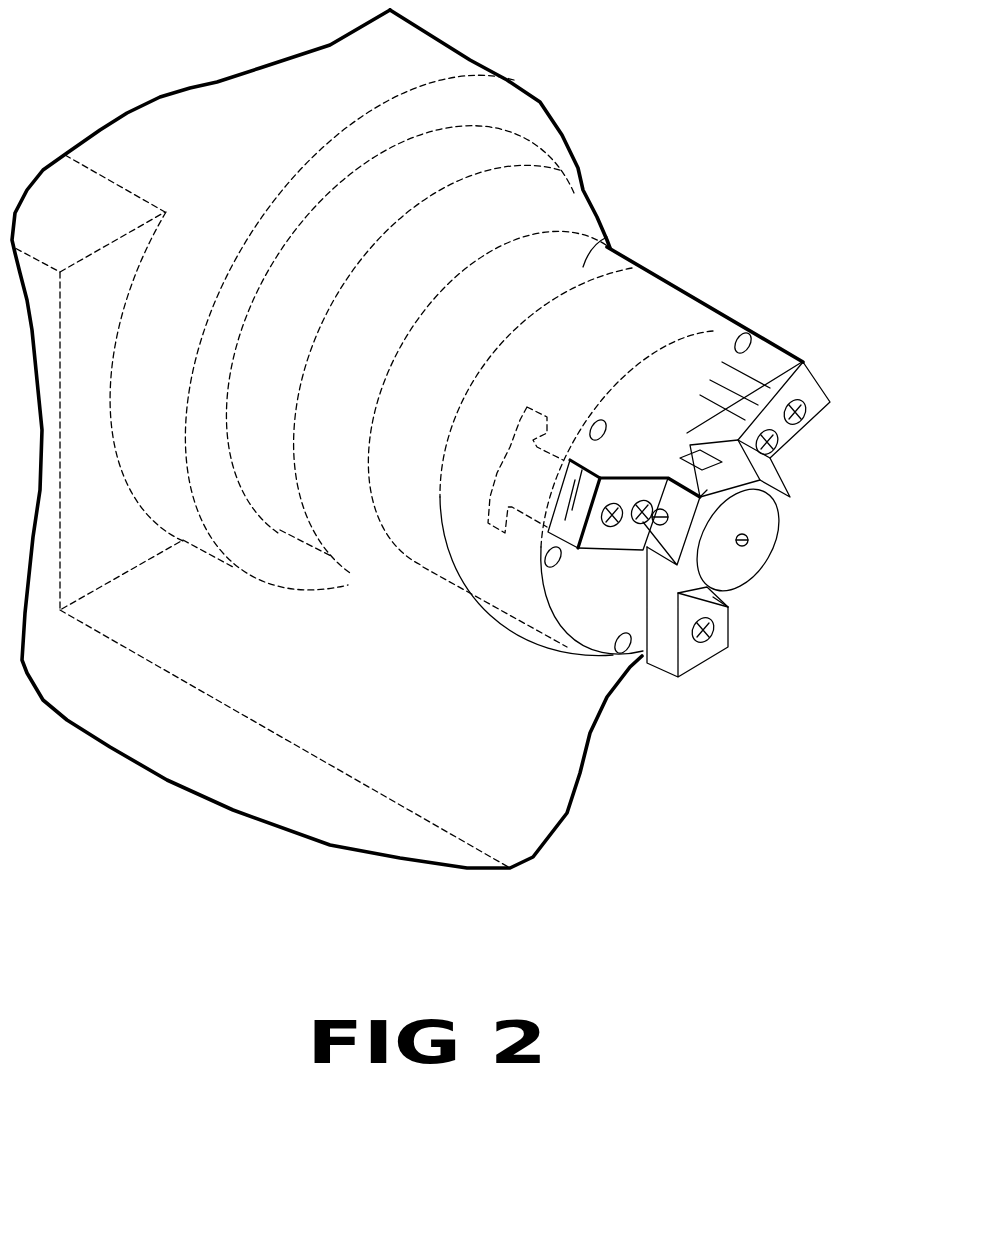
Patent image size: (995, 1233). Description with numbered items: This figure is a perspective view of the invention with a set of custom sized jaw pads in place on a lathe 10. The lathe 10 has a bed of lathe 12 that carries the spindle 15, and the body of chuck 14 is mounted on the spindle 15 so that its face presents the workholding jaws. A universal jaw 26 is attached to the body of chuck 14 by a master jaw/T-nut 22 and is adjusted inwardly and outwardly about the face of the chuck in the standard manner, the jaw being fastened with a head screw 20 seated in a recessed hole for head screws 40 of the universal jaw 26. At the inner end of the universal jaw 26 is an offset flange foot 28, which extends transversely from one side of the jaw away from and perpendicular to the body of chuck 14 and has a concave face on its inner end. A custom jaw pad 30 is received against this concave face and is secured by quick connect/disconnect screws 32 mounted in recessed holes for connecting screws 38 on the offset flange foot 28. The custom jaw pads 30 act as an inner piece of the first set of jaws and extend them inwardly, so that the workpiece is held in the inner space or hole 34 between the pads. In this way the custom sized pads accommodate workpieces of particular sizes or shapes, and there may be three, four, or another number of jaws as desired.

The lathe 10 is at (432, 54).
The bed of lathe 12 is at (153, 742).
The body of chuck 14 is at (647, 303).
The spindle 15 is at (607, 237).
The head screw 20 is at (797, 417).
The master jaw/T-nut 22 is at (510, 480).
The universal jaws 26 is at (770, 370).
The offset flange foot 28 is at (783, 483).
The custom jaw pads 30 is at (762, 510).
The quick connect/disconnect screws 32 is at (657, 515).
The hole of custom sized jaws 34 is at (755, 558).
The holes for connecting screws 38 is at (690, 465).
The holes for head screws 40 is at (803, 393).